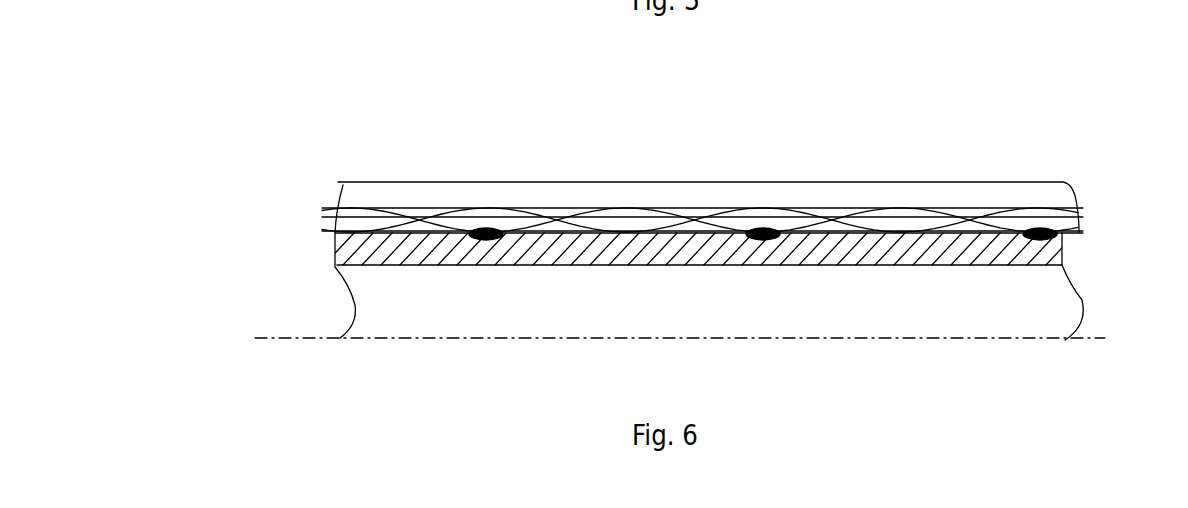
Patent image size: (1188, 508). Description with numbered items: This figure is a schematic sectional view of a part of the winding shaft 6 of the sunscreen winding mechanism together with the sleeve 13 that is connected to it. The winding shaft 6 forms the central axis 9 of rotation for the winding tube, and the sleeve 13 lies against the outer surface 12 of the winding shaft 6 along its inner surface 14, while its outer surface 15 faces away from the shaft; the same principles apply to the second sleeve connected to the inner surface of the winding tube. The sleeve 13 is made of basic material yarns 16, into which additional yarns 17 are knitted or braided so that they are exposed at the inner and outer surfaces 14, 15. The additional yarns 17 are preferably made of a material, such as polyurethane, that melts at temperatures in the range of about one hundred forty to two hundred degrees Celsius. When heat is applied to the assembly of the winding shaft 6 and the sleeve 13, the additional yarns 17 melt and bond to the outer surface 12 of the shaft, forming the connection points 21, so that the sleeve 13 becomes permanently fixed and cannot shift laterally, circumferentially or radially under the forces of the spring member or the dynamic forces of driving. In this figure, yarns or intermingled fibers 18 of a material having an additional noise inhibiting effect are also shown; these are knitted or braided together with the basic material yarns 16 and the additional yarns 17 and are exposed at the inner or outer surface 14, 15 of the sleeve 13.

The winding shaft 6 is at (372, 249).
The central axis 9 is at (1095, 342).
The outer surface of the winding shaft 12 is at (977, 228).
The sleeve 13 is at (418, 193).
The inner surface of the sleeve 14 is at (573, 270).
The outer surface of the sleeve 15 is at (690, 230).
The basic material yarns 16 is at (625, 210).
The additional yarn 17 is at (900, 204).
The noise inhibiting yarns 18 is at (852, 232).
The connection points 21 is at (484, 224).